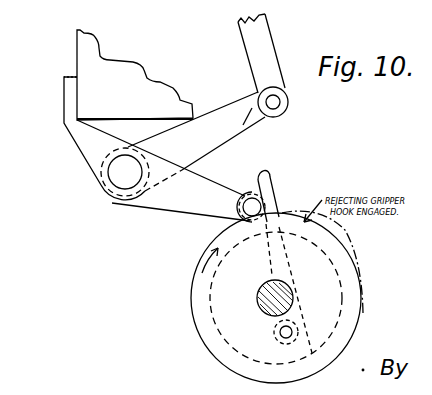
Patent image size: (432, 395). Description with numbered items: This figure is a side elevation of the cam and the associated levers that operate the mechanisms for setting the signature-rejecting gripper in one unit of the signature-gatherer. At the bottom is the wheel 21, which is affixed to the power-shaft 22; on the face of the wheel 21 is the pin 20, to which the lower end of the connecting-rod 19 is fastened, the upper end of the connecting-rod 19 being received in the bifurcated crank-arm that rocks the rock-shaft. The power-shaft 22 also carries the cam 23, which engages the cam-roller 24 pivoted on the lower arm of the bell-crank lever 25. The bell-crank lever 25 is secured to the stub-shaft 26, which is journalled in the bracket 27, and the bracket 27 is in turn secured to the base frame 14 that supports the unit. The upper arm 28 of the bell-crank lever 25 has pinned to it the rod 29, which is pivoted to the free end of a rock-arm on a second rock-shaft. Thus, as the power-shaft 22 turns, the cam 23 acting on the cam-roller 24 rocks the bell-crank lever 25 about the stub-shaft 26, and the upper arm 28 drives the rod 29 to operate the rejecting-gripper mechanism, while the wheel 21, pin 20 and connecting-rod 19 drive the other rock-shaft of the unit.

The base frame 14 is at (118, 84).
The connecting-rod 19 is at (270, 187).
The pin 20 is at (326, 364).
The wheel 21 is at (340, 283).
The power-shaft 22 is at (262, 305).
The cam 23 is at (197, 280).
The cam-roller 24 is at (247, 190).
The bell-crank lever 25 is at (179, 201).
The stub-shaft 26 is at (124, 178).
The bracket 27 is at (82, 135).
The upper arm 28 is at (237, 132).
The rod 29 is at (268, 47).